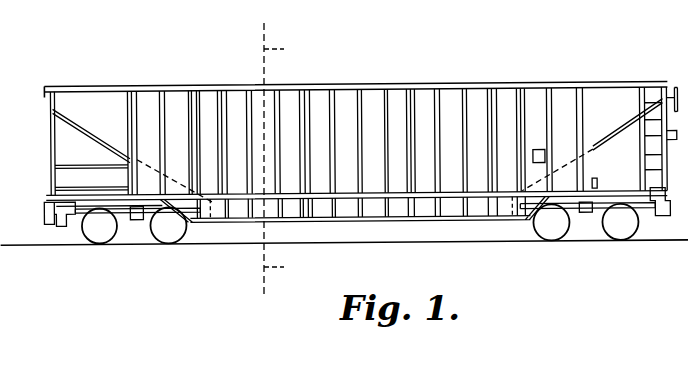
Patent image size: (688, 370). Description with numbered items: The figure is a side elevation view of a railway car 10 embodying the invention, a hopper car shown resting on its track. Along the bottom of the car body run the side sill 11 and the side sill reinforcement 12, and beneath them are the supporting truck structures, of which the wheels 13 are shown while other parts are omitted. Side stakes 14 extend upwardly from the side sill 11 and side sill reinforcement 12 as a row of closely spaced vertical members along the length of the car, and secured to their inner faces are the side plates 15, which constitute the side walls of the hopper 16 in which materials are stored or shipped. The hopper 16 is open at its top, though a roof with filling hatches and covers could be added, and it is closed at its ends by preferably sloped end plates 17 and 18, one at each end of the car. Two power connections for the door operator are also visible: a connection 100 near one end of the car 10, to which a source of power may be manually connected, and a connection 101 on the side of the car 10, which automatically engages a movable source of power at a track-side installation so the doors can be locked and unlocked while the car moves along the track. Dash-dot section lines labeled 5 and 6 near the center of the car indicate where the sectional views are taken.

The railway car 10 is at (463, 70).
The side sill 11 is at (137, 222).
The side sill reinforcement 12 is at (448, 223).
The wheels 13 is at (84, 240).
The side stakes 14 is at (312, 101).
The side plates 15 is at (459, 138).
The hopper 16 is at (371, 100).
The sloped end plate 17 is at (78, 119).
The sloped end plate 18 is at (627, 125).
The connection 100 is at (597, 186).
The connection 101 is at (542, 150).
The section line 5- 5 is at (284, 264).
The section line 6- 6 is at (284, 290).